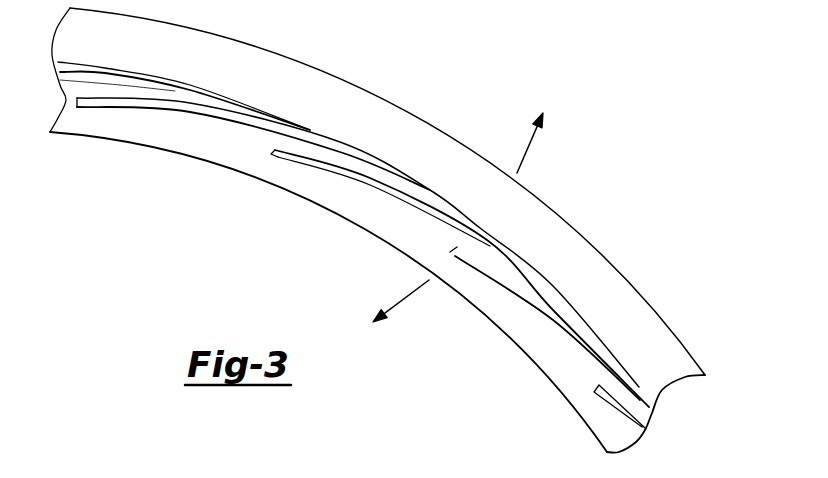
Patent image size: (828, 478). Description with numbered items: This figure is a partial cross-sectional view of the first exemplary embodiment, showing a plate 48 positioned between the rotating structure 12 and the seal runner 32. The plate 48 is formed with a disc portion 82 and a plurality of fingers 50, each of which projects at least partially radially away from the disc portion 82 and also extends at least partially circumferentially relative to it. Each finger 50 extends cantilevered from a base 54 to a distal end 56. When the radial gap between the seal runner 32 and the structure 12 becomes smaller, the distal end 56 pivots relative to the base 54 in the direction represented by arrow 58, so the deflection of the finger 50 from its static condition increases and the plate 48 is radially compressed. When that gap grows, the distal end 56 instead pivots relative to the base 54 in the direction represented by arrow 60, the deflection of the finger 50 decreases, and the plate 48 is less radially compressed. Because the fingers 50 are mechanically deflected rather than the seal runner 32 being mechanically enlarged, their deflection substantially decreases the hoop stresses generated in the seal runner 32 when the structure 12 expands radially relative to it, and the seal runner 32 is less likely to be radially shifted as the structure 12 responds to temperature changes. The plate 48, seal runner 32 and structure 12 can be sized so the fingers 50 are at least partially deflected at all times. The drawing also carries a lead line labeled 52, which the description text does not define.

The structure 12 is at (377, 230).
The seal runner 32 is at (419, 133).
The plate 48 is at (72, 108).
The fingers 50 is at (313, 152).
The lower edge 52 is at (233, 172).
The base 54 is at (275, 155).
The distal end 56 is at (483, 227).
The arrow 58 is at (404, 302).
The arrow 60 is at (535, 143).
The disc portion 82 is at (403, 230).